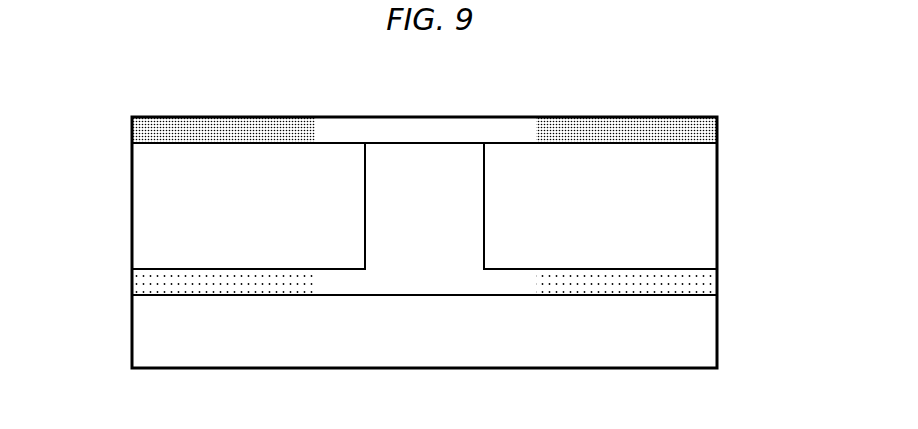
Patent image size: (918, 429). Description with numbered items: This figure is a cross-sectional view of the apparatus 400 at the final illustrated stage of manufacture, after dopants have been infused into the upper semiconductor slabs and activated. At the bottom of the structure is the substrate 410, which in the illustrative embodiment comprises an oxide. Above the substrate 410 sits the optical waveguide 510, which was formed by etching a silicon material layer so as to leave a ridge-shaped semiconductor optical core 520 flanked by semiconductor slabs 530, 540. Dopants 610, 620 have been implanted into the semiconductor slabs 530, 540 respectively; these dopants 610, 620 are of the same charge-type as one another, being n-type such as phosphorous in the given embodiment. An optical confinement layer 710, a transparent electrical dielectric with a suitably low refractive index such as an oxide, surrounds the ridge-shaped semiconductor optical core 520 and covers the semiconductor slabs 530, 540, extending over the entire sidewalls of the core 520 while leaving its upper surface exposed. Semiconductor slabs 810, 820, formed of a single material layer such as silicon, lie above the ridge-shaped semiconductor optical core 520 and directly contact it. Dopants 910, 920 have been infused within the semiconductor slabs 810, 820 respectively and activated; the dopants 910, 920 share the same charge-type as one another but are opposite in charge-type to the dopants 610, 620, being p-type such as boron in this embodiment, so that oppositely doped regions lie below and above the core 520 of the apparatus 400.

The apparatus 400 is at (748, 50).
The substrate 410 is at (131, 330).
The optical waveguide 510 is at (360, 187).
The ridge-shaped semiconductor optical core 520 is at (489, 187).
The semiconductor slab 530 is at (724, 285).
The semiconductor slab 540 is at (128, 281).
The dopants 610 is at (615, 282).
The dopants 620 is at (225, 278).
The optical confinement layer 710 is at (131, 209).
The semiconductor slab 810 is at (724, 133).
The semiconductor slab 820 is at (128, 127).
The dopants 910 is at (600, 128).
The dopants 920 is at (250, 128).